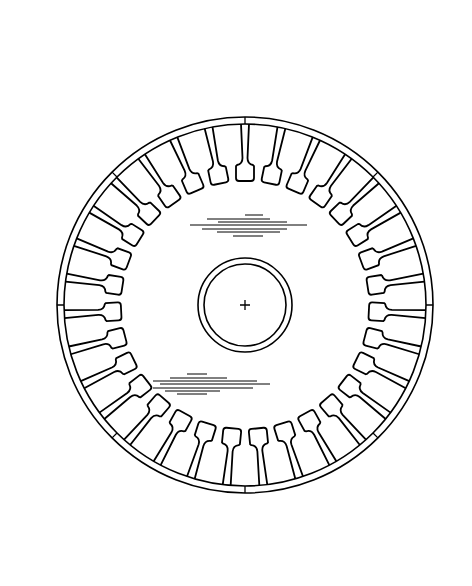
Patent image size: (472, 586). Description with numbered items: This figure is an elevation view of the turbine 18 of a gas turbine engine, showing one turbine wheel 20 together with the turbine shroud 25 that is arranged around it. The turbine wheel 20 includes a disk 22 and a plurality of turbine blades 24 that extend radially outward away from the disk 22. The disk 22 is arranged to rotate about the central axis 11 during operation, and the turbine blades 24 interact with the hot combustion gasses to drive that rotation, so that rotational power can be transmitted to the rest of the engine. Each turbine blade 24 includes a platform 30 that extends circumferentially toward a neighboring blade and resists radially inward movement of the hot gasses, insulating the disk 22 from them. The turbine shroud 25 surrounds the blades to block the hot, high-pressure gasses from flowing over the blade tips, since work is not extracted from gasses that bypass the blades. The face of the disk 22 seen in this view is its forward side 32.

The turbine 18 is at (303, 108).
The turbine shroud 25 is at (351, 152).
The turbine blades 24 is at (371, 182).
The turbine wheel 20 is at (168, 172).
The platform 30 is at (232, 158).
The disk 22 is at (168, 254).
The central axis 11 is at (247, 302).
The forward side 32 is at (148, 350).